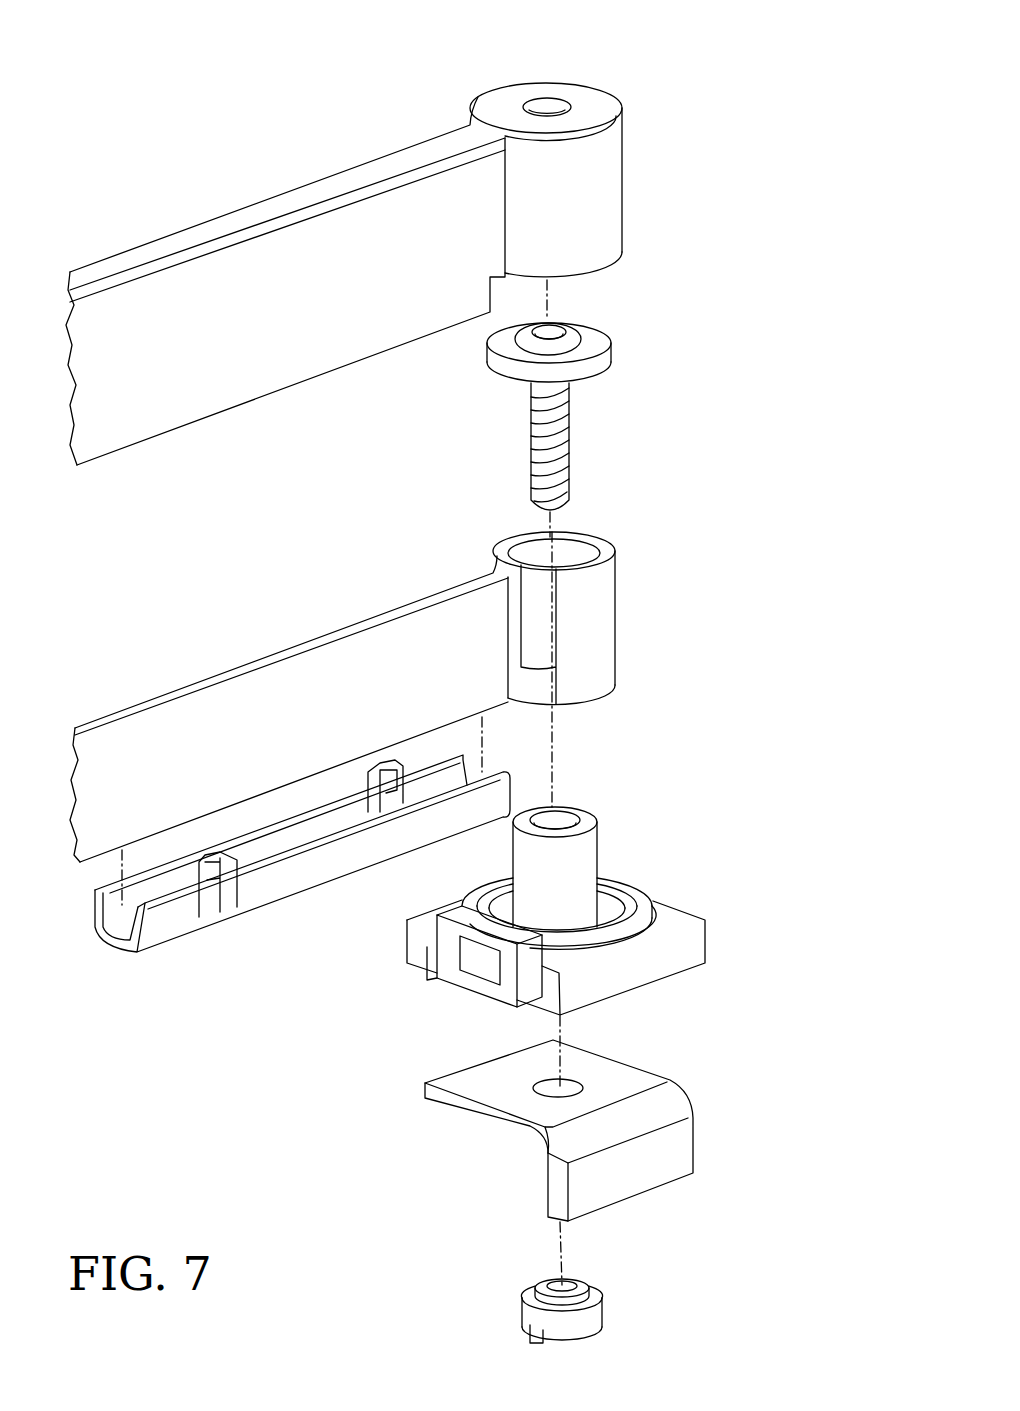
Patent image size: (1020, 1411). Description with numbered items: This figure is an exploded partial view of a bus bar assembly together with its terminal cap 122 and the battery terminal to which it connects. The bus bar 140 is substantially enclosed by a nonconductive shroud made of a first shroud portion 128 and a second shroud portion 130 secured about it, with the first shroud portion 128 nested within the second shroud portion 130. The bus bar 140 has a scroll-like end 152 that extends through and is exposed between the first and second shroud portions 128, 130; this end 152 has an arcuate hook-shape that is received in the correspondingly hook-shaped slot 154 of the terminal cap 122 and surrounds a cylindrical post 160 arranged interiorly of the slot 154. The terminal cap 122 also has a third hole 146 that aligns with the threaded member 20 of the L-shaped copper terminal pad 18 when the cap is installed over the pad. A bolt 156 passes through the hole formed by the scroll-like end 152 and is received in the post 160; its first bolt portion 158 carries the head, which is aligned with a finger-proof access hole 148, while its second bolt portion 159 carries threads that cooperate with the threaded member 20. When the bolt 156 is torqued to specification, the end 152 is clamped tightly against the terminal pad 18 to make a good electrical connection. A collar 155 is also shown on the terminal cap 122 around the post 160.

The terminal pad 18 is at (662, 1167).
The threaded member 20 is at (583, 1320).
The terminal cap 122 is at (672, 957).
The first shroud portion 128 is at (262, 248).
The second shroud portion 130 is at (326, 858).
The bus bar 140 is at (335, 688).
The third hole 146 is at (562, 820).
The access hole 148 is at (555, 103).
The end 152 is at (620, 620).
The slot 154 is at (507, 920).
The collar 155 is at (647, 897).
The bolt 156 is at (573, 433).
The first bolt portion 158 is at (593, 338).
The second bolt portion 159 is at (563, 478).
The cylindrical post 160 is at (583, 848).